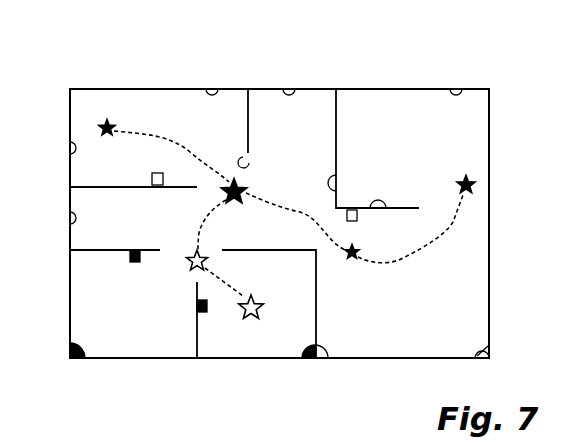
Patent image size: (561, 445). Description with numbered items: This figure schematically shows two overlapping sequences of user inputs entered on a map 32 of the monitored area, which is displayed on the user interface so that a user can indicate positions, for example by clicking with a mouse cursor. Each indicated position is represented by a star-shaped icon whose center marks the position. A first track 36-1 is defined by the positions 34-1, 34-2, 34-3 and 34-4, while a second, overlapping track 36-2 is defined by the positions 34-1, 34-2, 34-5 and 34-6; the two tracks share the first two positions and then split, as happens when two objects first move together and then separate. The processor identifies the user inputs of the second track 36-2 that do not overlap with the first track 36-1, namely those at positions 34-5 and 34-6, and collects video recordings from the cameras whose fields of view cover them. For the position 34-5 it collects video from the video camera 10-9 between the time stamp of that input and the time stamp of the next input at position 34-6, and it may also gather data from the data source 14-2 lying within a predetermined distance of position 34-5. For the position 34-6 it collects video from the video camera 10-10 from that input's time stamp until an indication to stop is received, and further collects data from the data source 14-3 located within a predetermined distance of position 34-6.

The map 32 is at (117, 89).
The video camera 10-9 is at (72, 350).
The video camera 10-10 is at (302, 353).
The data source 14-2 is at (130, 256).
The data source 14-3 is at (197, 308).
The indication of a position 34-1 is at (105, 134).
The position 34-2 is at (229, 204).
The position 34-3 is at (348, 259).
The position 34-4 is at (457, 185).
The position 34-5 is at (187, 259).
The position 34-6 is at (240, 310).
The first track 36-1 is at (270, 205).
The second track 36-2 is at (219, 284).